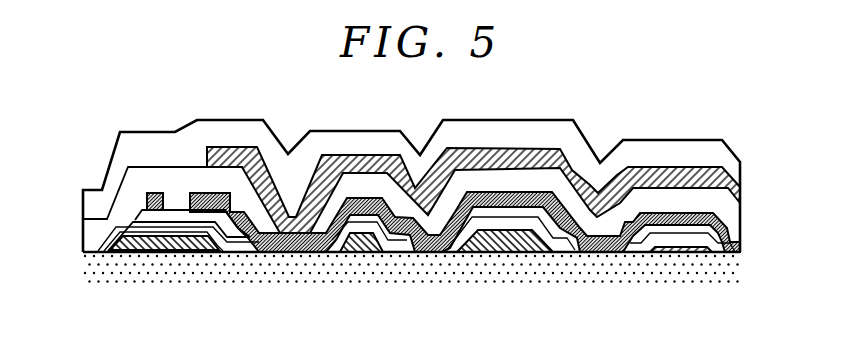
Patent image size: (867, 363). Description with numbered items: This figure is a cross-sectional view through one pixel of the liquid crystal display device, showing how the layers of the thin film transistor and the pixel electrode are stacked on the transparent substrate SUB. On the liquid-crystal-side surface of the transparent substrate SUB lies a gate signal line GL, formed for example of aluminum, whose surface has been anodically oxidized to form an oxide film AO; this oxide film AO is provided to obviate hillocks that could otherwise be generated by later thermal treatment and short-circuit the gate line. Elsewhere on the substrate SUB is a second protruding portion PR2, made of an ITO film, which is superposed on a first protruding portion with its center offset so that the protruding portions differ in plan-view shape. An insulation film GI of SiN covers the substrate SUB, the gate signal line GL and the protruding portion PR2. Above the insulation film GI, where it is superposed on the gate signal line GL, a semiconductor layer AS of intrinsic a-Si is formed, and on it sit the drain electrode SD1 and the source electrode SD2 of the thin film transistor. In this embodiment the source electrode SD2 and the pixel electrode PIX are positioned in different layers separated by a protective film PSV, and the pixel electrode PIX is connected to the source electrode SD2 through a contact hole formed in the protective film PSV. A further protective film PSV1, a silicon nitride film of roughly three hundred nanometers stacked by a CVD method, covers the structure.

The transparent substrate SUB is at (395, 273).
The gate signal line GL is at (175, 252).
The oxide film AO is at (115, 238).
The insulation film GI is at (172, 232).
The semiconductor layer AS is at (186, 217).
The drain electrode SD1 is at (158, 192).
The source electrode SD2 is at (214, 192).
The protective film PSV is at (353, 183).
The protective film PSV1 is at (662, 143).
The pixel electrode PIX is at (693, 170).
The second protruding portion PR2 is at (502, 232).